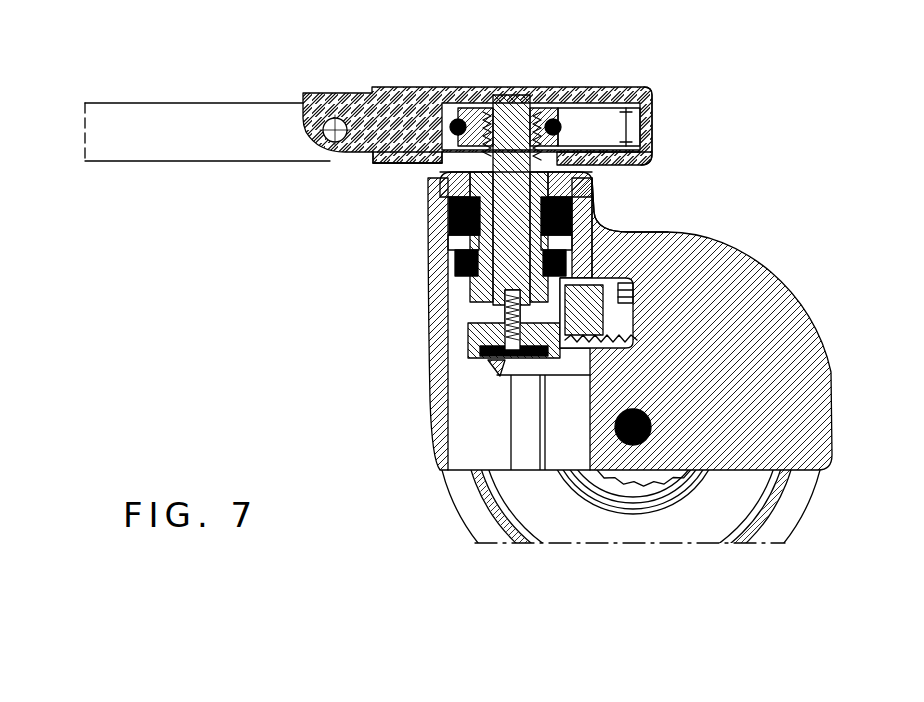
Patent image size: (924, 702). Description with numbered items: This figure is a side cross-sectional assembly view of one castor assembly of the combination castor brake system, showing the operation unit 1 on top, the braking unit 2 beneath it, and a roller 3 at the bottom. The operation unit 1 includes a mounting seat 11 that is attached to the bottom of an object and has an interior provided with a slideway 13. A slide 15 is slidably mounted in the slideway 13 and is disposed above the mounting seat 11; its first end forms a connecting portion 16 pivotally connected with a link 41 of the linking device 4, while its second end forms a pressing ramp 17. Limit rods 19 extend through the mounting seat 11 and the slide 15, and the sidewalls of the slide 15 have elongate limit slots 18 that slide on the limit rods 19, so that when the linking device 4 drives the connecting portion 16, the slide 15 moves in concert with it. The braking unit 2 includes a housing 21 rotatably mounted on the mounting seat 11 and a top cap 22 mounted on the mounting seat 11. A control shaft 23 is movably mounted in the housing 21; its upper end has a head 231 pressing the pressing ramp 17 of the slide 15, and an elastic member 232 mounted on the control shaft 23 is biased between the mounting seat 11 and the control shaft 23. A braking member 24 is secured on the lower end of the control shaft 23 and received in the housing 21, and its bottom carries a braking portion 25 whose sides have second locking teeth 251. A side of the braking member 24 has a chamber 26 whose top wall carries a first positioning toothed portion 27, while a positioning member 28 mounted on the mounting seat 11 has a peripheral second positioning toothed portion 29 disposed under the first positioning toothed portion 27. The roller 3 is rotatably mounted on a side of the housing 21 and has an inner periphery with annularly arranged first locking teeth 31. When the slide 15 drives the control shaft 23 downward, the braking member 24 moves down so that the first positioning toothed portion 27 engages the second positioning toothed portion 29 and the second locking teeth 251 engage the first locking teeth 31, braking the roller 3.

The operation unit 1 is at (722, 83).
The mounting seat 11 is at (645, 118).
The slideway 13 is at (655, 152).
The slide 15 is at (395, 165).
The connecting portion 16 is at (328, 158).
The pressing ramp 17 is at (546, 103).
The limit slot 18 is at (644, 103).
The limit rod 19 is at (592, 93).
The braking unit 2 is at (322, 390).
The housing 21 is at (432, 338).
The top cap 22 is at (465, 186).
The control shaft 23 is at (460, 266).
The head 231 is at (508, 95).
The elastic member 232 is at (486, 106).
The braking member 24 is at (678, 262).
The braking portion 25 is at (530, 357).
The second locking teeth 251 is at (578, 378).
The chamber 26 is at (633, 313).
The first positioning toothed portion 27 is at (600, 237).
The positioning member 28 is at (633, 330).
The second positioning toothed portion 29 is at (633, 283).
The roller 3 is at (793, 518).
The first locking teeth 31 is at (605, 350).
The linking device 4 is at (119, 198).
The link 41 is at (177, 147).